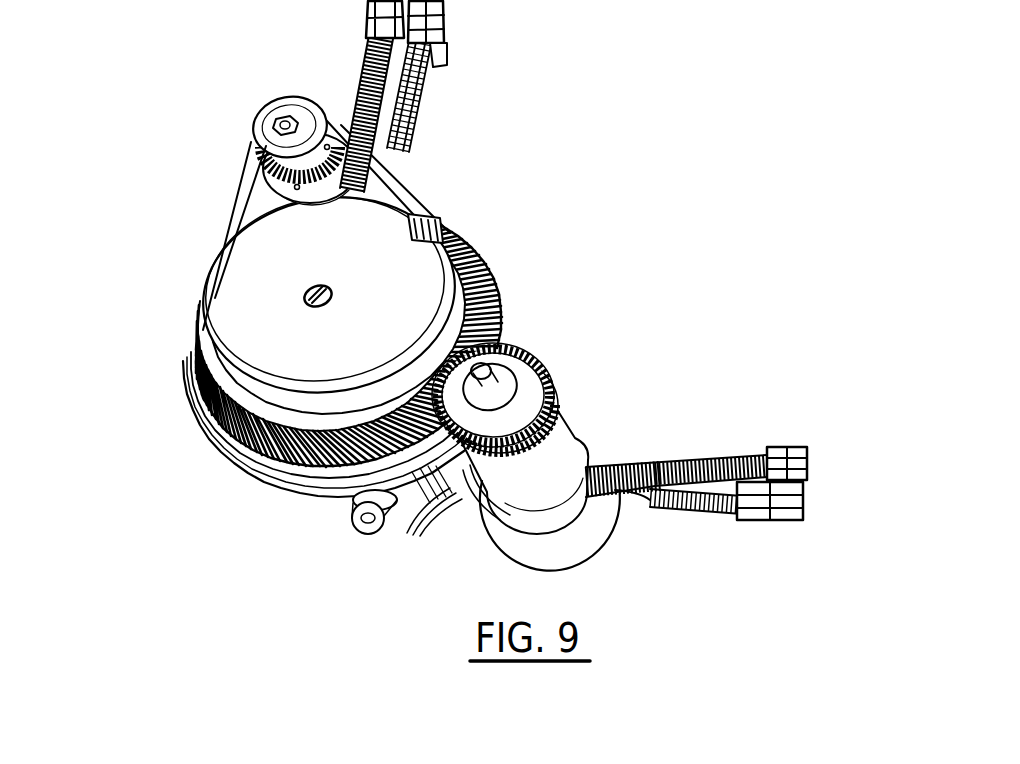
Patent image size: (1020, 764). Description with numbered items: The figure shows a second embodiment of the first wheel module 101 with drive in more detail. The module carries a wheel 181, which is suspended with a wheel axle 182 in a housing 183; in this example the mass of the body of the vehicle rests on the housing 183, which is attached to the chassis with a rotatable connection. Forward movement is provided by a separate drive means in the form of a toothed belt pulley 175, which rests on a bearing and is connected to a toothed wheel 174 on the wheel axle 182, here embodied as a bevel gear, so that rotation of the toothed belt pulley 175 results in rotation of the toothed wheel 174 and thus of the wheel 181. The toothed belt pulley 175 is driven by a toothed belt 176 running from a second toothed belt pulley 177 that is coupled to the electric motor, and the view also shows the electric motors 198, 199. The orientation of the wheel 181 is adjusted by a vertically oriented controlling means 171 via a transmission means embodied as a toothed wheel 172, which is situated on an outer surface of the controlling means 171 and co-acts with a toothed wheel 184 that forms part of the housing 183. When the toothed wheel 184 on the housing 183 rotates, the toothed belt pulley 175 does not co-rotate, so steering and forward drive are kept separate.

The wheel module 101 is at (775, 166).
The controlling means 171 is at (552, 493).
The toothed wheel 172 is at (522, 362).
The toothed wheel 174 is at (443, 510).
The toothed belt pulley 175 is at (232, 337).
The toothed belt 176 is at (243, 216).
The second toothed belt pulley 177 is at (267, 118).
The wheel 181 is at (312, 505).
The wheel axle 182 is at (352, 518).
The housing 183 is at (483, 271).
The toothed wheel 184 is at (460, 251).
The electric motor 198 is at (373, 80).
The electric motor 199 is at (677, 465).